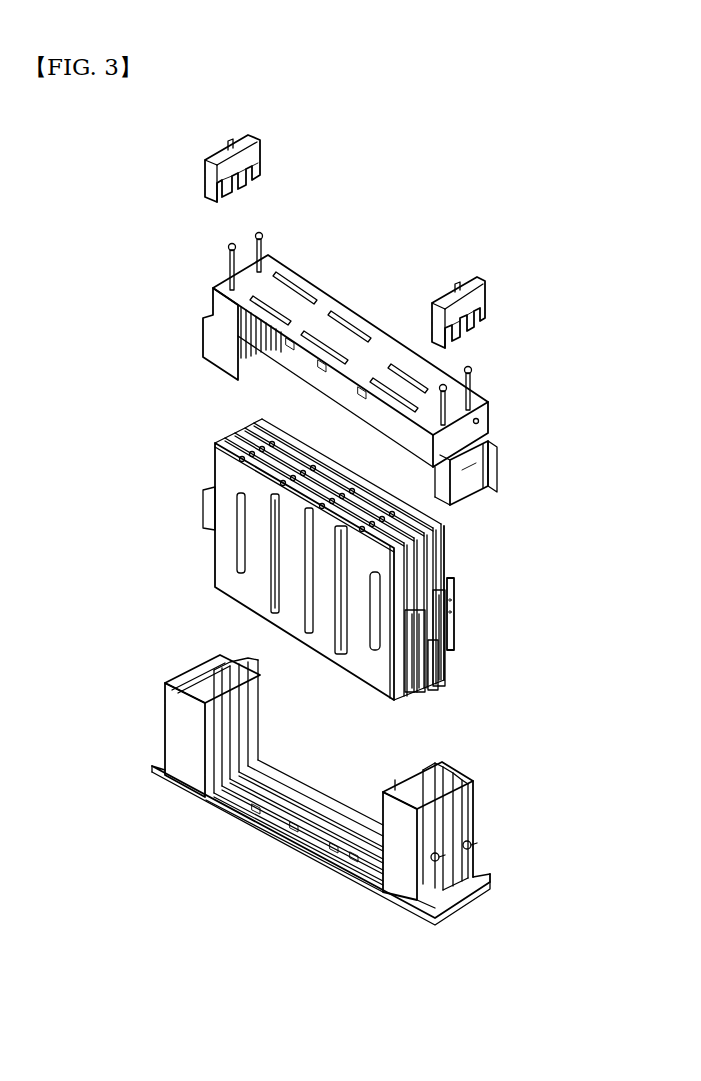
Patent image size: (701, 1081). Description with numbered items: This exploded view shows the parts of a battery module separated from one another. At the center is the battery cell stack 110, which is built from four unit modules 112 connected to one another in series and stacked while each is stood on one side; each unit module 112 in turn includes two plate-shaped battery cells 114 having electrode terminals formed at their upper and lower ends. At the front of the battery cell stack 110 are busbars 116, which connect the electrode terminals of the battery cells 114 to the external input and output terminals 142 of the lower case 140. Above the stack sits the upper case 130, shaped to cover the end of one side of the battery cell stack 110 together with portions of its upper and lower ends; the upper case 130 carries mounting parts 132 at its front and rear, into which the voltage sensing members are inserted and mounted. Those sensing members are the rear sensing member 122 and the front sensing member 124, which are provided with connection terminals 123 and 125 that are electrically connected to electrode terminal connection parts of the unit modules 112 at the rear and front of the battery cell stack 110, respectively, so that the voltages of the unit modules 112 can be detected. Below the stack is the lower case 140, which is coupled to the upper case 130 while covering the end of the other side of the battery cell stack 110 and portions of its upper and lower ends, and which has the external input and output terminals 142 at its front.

The battery cell stack 110 is at (328, 544).
The unit module 112 is at (262, 426).
The battery cell 114 is at (444, 533).
The busbar 116 is at (454, 613).
The rear sensing member 122 is at (216, 175).
The connection terminal 123 is at (236, 191).
The front sensing member 124 is at (521, 317).
The connection terminal 125 is at (467, 335).
The upper case 130 is at (346, 369).
The mounting part 132 is at (485, 451).
The lower case 140 is at (318, 790).
The external input and output terminal 142 is at (477, 846).